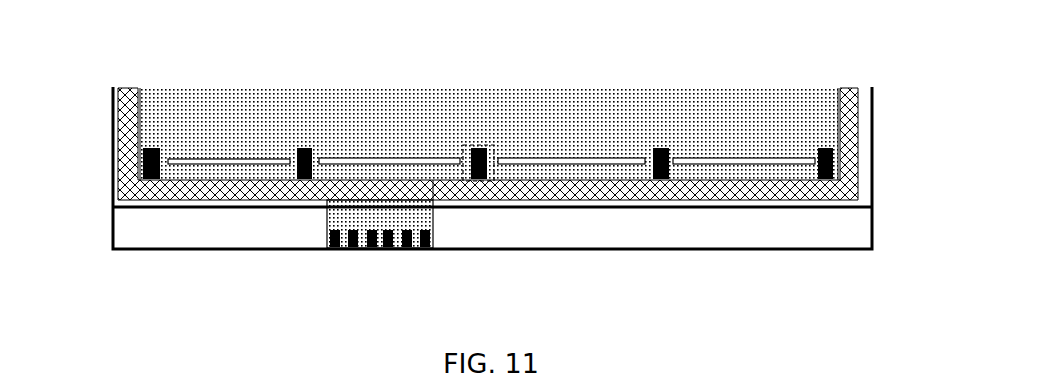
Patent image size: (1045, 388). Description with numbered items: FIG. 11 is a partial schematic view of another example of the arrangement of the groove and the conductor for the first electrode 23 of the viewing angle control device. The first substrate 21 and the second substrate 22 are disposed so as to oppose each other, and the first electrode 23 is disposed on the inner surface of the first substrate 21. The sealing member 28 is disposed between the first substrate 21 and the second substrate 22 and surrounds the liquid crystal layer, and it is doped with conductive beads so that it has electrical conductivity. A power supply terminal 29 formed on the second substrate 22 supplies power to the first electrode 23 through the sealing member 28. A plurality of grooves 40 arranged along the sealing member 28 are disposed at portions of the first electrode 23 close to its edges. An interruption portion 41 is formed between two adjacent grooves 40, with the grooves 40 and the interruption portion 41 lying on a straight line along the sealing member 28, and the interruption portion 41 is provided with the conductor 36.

The first substrate 21 is at (112, 180).
The second substrate 22 is at (173, 250).
The first electrode 23 is at (743, 113).
The sealing member 28 is at (130, 130).
The power supply terminal 29 is at (335, 250).
The conductor 36 is at (837, 162).
The groove 40 is at (400, 165).
The interruption portion 41 is at (490, 165).